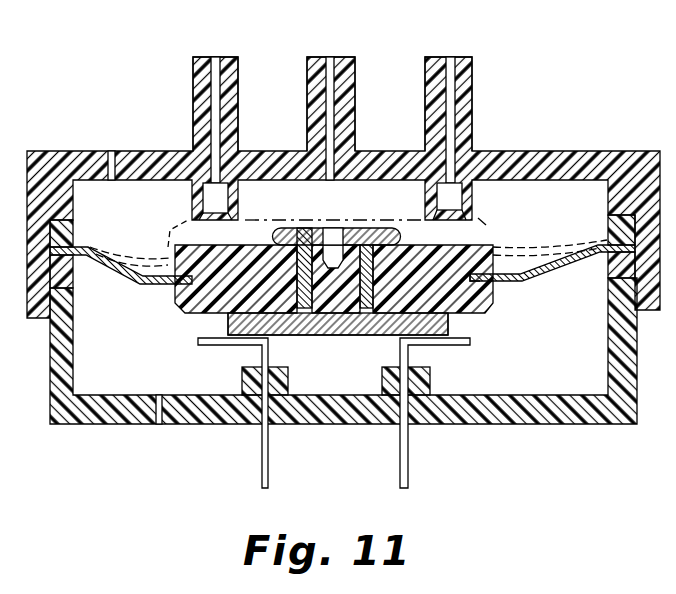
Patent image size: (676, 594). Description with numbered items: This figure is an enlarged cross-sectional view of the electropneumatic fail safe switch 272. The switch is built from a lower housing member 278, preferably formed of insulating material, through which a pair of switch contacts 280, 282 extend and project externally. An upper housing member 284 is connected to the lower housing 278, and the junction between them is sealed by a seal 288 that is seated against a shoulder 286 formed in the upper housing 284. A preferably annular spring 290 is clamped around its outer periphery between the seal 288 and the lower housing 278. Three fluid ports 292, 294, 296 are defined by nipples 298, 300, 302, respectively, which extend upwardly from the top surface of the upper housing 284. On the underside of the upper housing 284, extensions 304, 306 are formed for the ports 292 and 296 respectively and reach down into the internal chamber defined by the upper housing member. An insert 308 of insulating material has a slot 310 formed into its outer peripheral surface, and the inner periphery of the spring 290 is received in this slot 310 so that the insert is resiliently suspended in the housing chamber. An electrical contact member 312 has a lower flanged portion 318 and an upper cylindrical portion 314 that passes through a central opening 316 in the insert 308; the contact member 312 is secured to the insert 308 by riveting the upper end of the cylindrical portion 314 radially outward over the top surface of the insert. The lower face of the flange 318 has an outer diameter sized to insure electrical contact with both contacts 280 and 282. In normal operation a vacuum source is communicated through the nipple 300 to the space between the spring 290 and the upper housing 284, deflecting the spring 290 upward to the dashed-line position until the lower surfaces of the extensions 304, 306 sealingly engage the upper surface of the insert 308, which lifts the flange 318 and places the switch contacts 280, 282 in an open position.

The fail safe switch 272 is at (338, 258).
The lower housing member 278 is at (557, 425).
The switch contact 280 is at (262, 470).
The switch contact 282 is at (400, 470).
The upper housing member 284 is at (560, 151).
The shoulder 286 is at (622, 213).
The seal 288 is at (635, 243).
The annular spring 290 is at (130, 262).
The fluid port 292 is at (216, 57).
The fluid port 294 is at (330, 57).
The fluid port 296 is at (447, 57).
The nipple 298 is at (193, 86).
The nipple 300 is at (307, 86).
The nipple 302 is at (472, 86).
The extension 304 is at (192, 203).
The extension 306 is at (425, 203).
The insert 308 is at (490, 248).
The slot 310 is at (492, 286).
The electrical contact member 312 is at (358, 342).
The upper cylindrical portion 314 is at (355, 240).
The central opening 316 is at (304, 240).
The lower flanged portion 318 is at (450, 327).